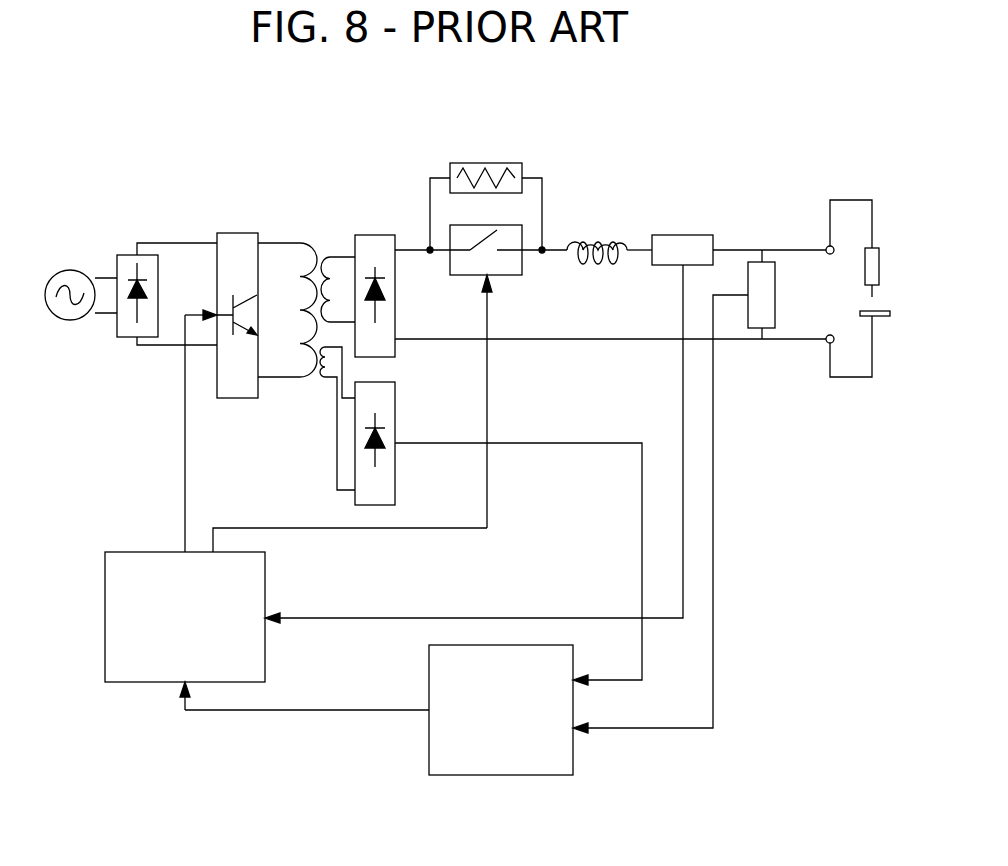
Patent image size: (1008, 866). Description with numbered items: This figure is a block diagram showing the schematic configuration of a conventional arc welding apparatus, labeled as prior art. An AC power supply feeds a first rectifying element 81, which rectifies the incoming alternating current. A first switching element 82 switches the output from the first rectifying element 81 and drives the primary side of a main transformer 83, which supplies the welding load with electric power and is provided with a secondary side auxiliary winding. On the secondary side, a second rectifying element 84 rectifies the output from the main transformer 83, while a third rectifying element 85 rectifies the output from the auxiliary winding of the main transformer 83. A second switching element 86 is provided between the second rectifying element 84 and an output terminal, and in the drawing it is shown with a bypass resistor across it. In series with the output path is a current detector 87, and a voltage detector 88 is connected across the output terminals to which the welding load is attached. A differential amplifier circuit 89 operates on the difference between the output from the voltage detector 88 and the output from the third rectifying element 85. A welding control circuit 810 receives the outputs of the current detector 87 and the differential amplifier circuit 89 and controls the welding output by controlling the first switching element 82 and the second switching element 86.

The first rectifying element 81 is at (127, 245).
The first switching element 82 is at (237, 232).
The main transformer 83 is at (310, 235).
The second rectifying element 84 is at (372, 232).
The third rectifying element 85 is at (355, 500).
The second switching element 86 is at (502, 275).
The current detector 87 is at (683, 233).
The voltage detector 88 is at (773, 290).
The differential amplifier circuit 89 is at (503, 775).
The welding control circuit 810 is at (105, 588).